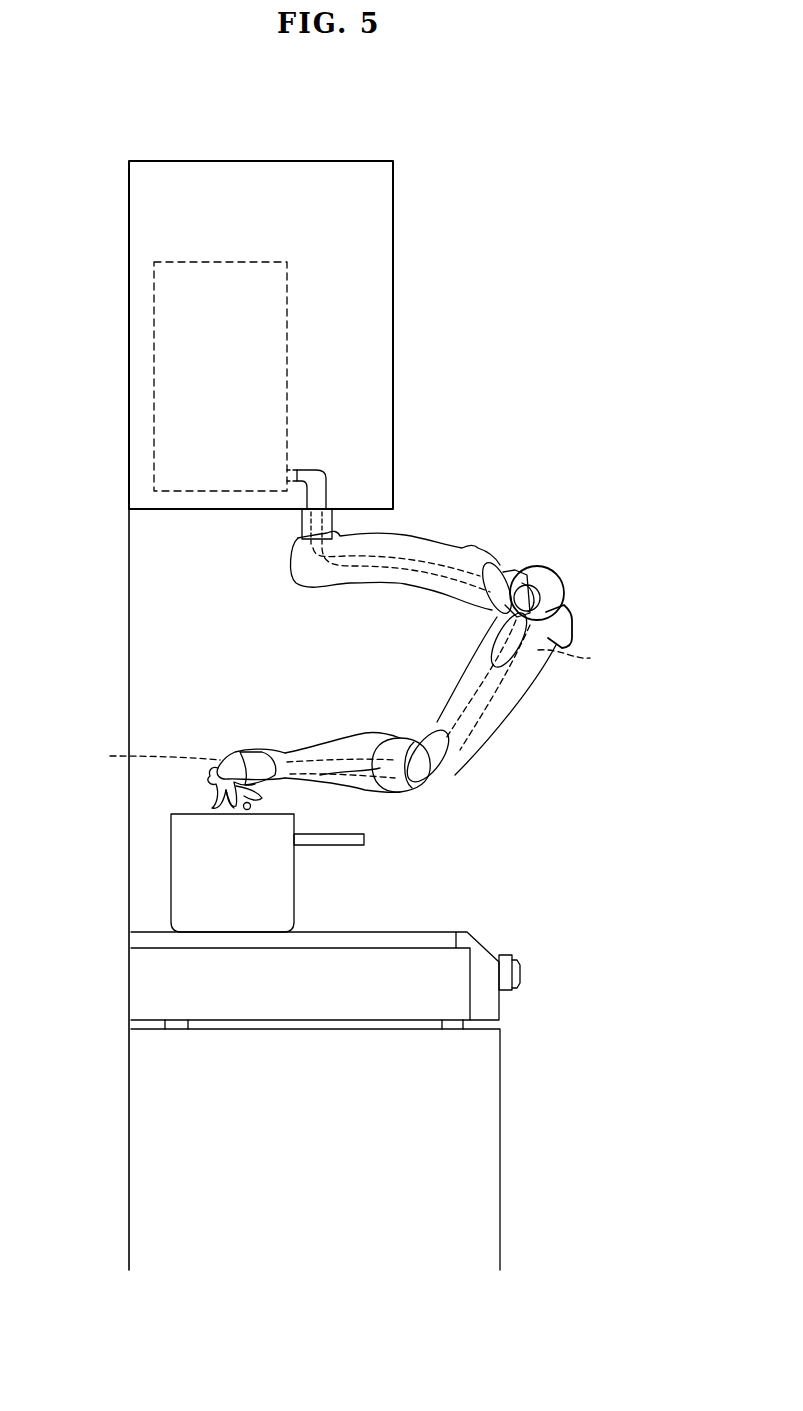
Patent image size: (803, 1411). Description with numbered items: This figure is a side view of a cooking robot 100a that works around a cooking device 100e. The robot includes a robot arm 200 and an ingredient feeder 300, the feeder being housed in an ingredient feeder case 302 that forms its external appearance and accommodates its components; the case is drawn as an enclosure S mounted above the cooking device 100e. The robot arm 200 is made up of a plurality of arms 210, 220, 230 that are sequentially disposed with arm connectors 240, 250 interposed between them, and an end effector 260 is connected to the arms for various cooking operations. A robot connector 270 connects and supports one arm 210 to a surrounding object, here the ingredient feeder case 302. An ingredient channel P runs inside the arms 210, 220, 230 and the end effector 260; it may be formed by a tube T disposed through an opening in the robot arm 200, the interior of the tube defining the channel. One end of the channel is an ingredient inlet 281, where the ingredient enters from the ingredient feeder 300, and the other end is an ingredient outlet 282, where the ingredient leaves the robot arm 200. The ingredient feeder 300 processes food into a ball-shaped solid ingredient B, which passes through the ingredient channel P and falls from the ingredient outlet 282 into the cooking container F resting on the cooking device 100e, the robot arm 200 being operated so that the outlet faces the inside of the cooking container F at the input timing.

The robot 100a is at (545, 474).
The cooking device 100e is at (536, 993).
The robot arm 200 is at (340, 658).
The arm 210 is at (462, 545).
The arm 220 is at (517, 692).
The arm 230 is at (345, 745).
The arm connector 240 is at (545, 574).
The arm connector 250 is at (393, 758).
The end effector 260 is at (228, 752).
The robot connector 270 is at (298, 527).
The ingredient inlet 281 is at (318, 473).
The ingredient outlet 282 is at (150, 757).
The ingredient feeder 300 is at (253, 364).
The ingredient feeder case 302 is at (154, 347).
The support structure S is at (393, 322).
The tube T is at (413, 553).
The ingredient channel P is at (532, 650).
The solid ingredient B is at (243, 812).
The cooking container F is at (188, 870).